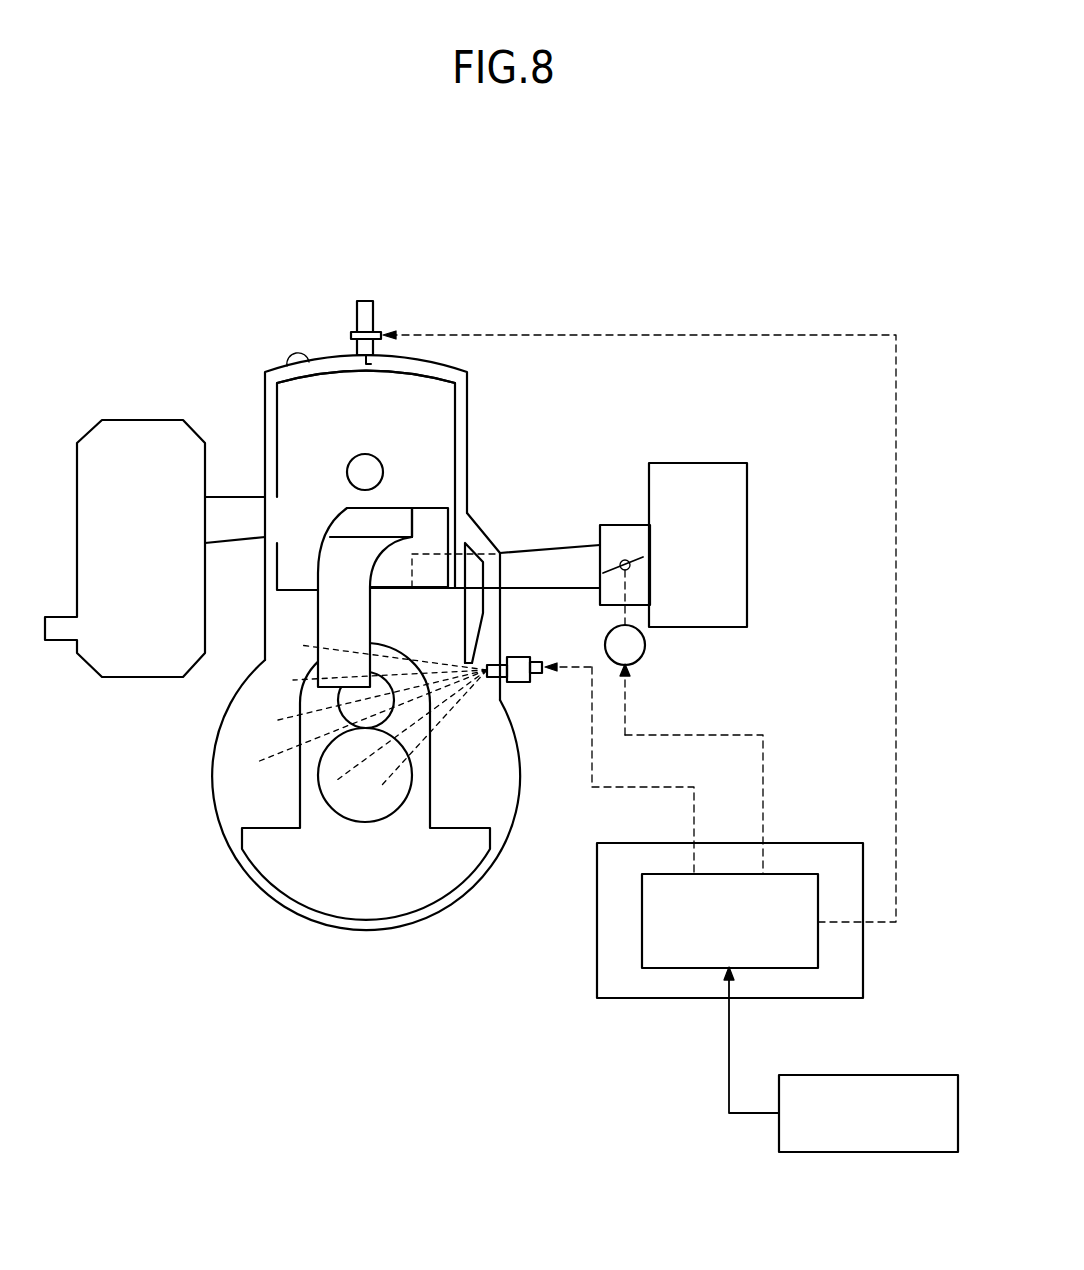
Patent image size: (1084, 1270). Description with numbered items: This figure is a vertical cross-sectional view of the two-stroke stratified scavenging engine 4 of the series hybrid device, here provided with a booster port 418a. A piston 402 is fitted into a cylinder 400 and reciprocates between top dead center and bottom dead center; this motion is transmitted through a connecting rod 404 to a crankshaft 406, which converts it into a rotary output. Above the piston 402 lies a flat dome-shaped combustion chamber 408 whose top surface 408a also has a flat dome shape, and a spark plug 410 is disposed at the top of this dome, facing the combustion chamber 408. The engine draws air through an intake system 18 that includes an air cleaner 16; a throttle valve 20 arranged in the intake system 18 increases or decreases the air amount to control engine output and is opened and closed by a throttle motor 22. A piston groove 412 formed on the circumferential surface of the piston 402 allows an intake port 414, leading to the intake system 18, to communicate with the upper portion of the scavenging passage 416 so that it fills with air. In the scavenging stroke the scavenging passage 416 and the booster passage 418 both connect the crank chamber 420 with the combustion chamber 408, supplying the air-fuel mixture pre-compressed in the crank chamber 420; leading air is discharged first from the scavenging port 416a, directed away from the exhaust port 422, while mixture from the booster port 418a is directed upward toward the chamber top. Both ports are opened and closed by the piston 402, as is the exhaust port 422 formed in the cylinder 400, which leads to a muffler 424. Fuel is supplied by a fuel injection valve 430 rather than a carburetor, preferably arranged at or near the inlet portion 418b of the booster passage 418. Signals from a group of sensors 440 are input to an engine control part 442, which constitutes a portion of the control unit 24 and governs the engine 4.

The 2-st engine 4 is at (625, 235).
The air cleaner 16 is at (748, 522).
The intake system 18 is at (583, 547).
The throttle valve 20 is at (640, 556).
The throttle motor 22 is at (646, 646).
The control unit 24 is at (640, 999).
The cylinder 400 is at (468, 392).
The piston 402 is at (292, 523).
The connecting rod 404 is at (387, 619).
The crankshaft 406 is at (355, 800).
The combustion chamber 408 is at (450, 360).
The top surface of the combustion chamber 408a is at (287, 362).
The spark plug 410 is at (365, 300).
The piston groove 412 is at (422, 510).
The intake port 414 is at (430, 565).
The scavenging passage 416 is at (315, 627).
The scavenging port 416a is at (355, 518).
The booster passage 418 is at (490, 624).
The booster port 418a is at (470, 526).
The inlet portion of the booster passage 418b is at (495, 651).
The crank chamber 420 is at (230, 782).
The exhaust port 422 is at (237, 497).
The muffler 424 is at (140, 420).
The fuel injection valve 430 is at (526, 684).
The group of sensors 440 is at (920, 1075).
The engine control part 442 is at (805, 874).